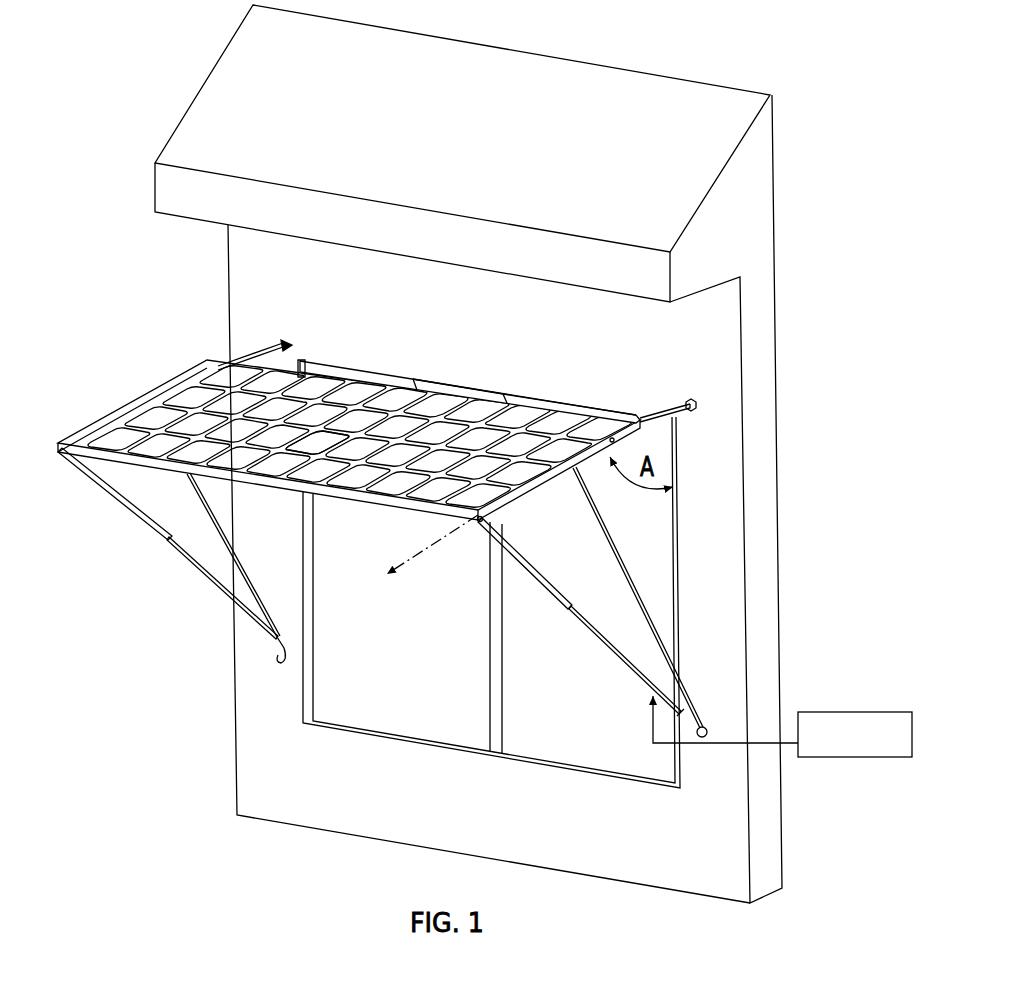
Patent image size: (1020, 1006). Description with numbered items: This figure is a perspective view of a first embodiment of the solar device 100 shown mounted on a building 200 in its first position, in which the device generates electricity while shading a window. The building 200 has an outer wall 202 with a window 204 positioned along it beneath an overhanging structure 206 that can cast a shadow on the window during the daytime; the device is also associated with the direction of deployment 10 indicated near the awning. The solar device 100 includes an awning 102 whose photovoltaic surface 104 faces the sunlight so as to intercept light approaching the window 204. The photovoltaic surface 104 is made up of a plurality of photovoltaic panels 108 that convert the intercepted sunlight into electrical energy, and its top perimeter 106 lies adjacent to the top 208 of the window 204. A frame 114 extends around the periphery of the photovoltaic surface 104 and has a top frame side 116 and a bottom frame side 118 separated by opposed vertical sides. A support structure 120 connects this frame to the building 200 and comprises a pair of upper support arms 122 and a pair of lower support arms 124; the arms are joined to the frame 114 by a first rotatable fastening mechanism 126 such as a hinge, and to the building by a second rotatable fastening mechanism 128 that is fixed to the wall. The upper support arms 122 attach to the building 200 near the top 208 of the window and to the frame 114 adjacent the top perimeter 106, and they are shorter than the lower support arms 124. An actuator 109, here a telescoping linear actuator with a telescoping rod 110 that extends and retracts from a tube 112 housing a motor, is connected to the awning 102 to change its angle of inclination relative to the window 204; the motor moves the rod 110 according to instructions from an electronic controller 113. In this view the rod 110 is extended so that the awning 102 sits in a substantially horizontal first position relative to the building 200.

The direction of deployment 10 is at (500, 557).
The solar device 100 is at (393, 502).
The awning 102 is at (141, 412).
The photovoltaic surface 104 is at (302, 432).
The top perimeter 106 is at (450, 383).
The photovoltaic panel 108 is at (300, 392).
The actuator 109 is at (178, 568).
The telescoping rod 110 is at (122, 502).
The tube 112 is at (212, 592).
The electronic controller 113 is at (851, 712).
The frame 114 is at (58, 440).
The top frame side 116 is at (500, 386).
The bottom frame side 118 is at (358, 511).
The support structure 120 is at (214, 357).
The upper support arm 122 is at (280, 341).
The lower support arm 124 is at (196, 498).
The first rotatable fastening mechanism 126 is at (615, 432).
The second rotatable fastening mechanism 128 is at (699, 403).
The building 200 is at (802, 306).
The outer wall 202 is at (725, 498).
The window 204 is at (372, 712).
The overhanging structure 206 is at (172, 218).
The top of the window 208 is at (584, 406).